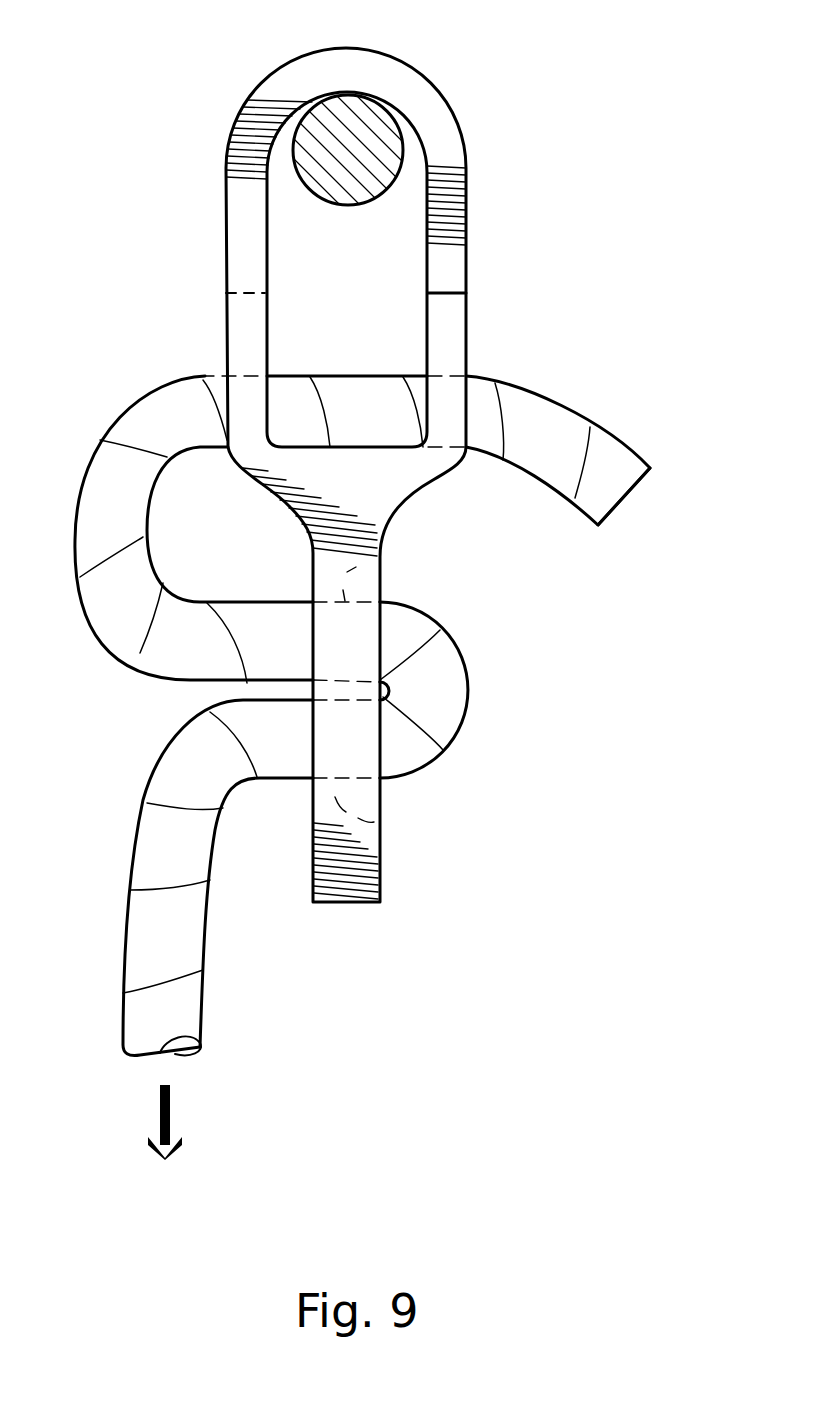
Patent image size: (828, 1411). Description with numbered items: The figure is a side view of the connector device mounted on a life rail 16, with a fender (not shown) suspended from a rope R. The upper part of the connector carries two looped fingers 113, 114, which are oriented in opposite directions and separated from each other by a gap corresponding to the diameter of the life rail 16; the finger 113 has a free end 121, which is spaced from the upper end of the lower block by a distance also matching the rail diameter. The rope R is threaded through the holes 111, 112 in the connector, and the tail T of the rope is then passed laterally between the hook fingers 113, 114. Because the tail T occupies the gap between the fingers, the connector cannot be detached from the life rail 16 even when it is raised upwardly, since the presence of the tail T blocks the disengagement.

The looped finger 113 is at (412, 88).
The life rail 16 is at (367, 153).
The free end 121 is at (445, 298).
The looped finger 114 is at (447, 348).
The hole 112 is at (387, 562).
The hole 111 is at (390, 826).
The rope R is at (88, 465).
The tail T is at (625, 505).